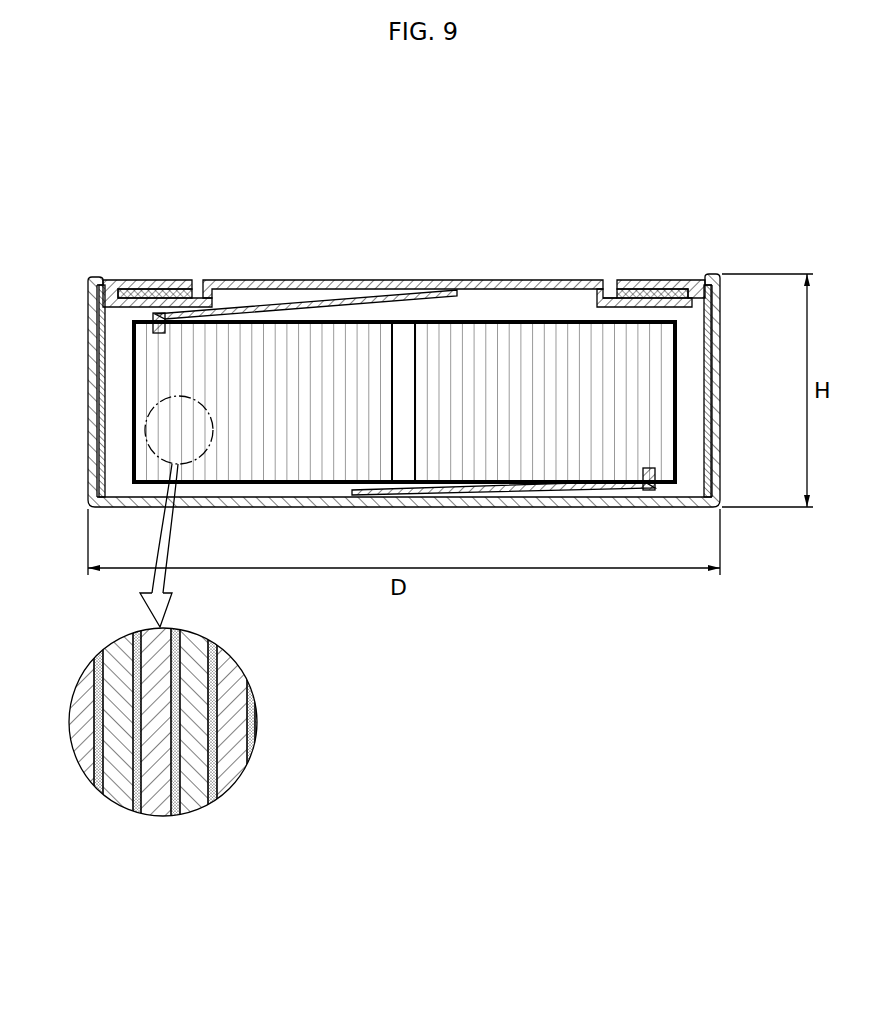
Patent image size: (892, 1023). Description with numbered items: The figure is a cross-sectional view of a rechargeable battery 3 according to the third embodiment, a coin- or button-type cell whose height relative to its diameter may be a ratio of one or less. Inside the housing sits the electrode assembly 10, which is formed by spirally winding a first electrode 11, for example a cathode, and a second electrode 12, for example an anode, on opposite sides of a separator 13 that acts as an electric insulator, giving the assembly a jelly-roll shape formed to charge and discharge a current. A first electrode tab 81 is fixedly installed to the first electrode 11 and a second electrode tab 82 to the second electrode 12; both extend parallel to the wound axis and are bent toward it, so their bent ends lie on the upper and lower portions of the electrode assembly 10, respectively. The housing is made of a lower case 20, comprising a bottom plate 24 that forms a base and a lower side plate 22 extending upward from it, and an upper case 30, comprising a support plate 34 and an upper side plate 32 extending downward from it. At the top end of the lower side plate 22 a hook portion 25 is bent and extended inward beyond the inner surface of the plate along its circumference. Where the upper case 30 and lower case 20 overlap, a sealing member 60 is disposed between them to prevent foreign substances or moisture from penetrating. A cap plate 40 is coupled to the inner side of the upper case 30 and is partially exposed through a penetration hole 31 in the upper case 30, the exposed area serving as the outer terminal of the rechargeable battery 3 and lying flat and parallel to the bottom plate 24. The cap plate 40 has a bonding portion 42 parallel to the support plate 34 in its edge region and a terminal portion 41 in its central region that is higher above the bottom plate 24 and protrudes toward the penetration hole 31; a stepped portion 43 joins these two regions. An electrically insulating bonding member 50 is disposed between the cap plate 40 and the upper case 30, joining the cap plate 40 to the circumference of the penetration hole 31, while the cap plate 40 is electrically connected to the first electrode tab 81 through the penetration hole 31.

The rechargeable battery 3 is at (411, 177).
The electrode assembly 10 is at (527, 308).
The first electrode 11 is at (159, 812).
The second electrode 12 is at (193, 812).
The separator 13 is at (176, 707).
The lower case 20 is at (420, 410).
The lower side plate 22 is at (93, 420).
The bottom plate 24 is at (283, 507).
The hook portion 25 is at (91, 278).
The upper case 30 is at (414, 391).
The penetration hole 31 is at (612, 296).
The upper side plate 32 is at (98, 375).
The support plate 34 is at (130, 280).
The cap plate 40 is at (404, 252).
The terminal portion 41 is at (273, 281).
The bonding portion 42 is at (646, 294).
The step portion of cap plate 43 is at (596, 298).
The bonding member 50 is at (164, 292).
The sealing member 60 is at (712, 364).
The first electrode tab 81 is at (318, 303).
The second electrode tab 82 is at (547, 496).